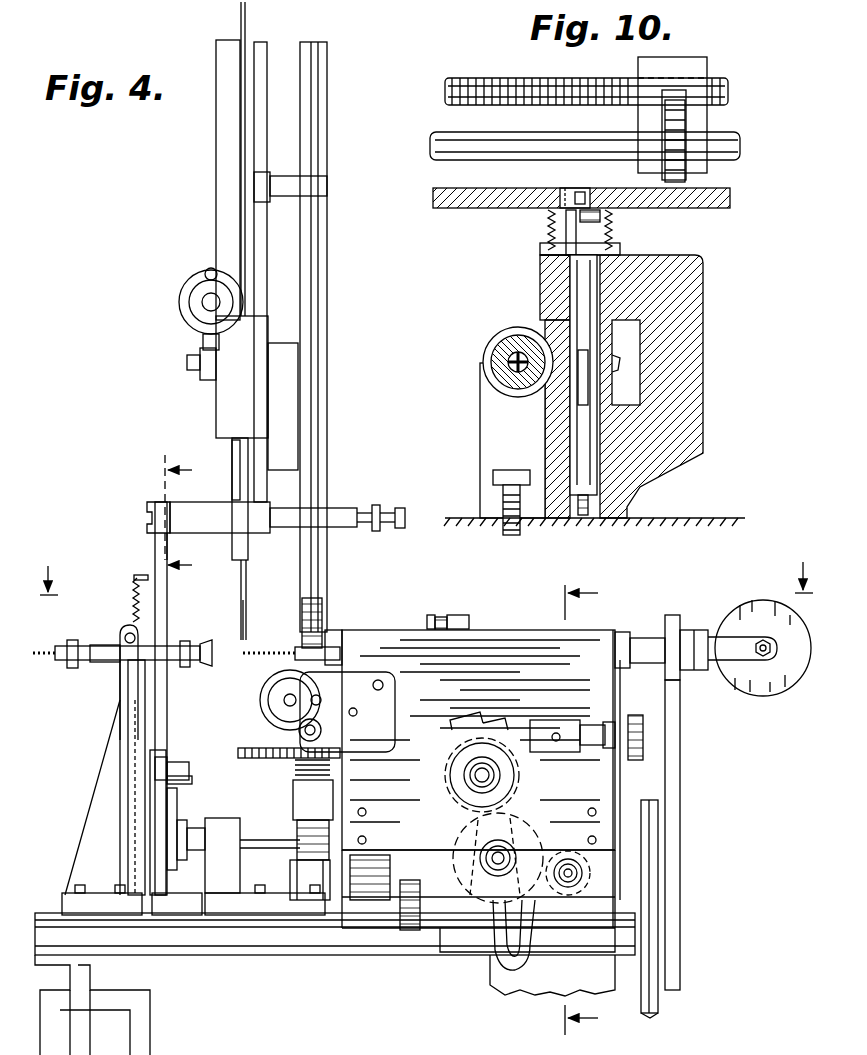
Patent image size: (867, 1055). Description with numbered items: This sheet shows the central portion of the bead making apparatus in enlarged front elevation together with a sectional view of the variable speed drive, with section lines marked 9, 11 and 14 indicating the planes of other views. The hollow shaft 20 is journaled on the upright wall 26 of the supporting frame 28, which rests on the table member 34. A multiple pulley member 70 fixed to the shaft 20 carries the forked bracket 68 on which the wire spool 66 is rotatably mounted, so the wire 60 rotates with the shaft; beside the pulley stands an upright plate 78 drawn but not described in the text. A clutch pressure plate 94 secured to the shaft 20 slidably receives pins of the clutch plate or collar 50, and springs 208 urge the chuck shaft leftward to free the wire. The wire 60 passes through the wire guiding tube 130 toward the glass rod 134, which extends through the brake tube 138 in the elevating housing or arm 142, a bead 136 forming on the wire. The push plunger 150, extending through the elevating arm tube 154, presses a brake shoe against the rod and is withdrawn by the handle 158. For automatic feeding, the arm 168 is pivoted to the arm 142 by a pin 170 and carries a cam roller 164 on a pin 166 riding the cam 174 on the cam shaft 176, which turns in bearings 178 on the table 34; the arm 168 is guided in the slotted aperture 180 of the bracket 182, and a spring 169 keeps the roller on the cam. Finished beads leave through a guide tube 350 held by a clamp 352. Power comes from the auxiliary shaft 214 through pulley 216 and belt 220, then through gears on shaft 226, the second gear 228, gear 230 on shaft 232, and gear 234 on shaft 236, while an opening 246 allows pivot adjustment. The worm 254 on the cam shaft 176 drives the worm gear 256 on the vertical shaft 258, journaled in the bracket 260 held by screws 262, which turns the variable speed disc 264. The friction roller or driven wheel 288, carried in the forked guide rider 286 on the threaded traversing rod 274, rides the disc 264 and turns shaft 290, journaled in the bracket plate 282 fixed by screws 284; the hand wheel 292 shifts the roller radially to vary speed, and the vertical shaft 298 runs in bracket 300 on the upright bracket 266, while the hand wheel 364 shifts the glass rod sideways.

In FIG. 4, the upright bracket 266 is at (216, 198).
In FIG. 4, the bracket 300 is at (315, 188).
In FIG. 4, the hand wheel 364 is at (179, 302).
In FIG. 4, the glass rod 134 is at (241, 592).
In FIG. 4, the brake tube 138 is at (240, 460).
In FIG. 4, the bead 136 is at (243, 636).
In FIG. 4, the elevating arm tube 154 is at (340, 508).
In FIG. 4, the pin 170 is at (147, 502).
In FIG. 4, the push plunger 150 is at (376, 505).
In FIG. 4, the handle 158 is at (405, 515).
In FIG. 4, the elevating housing or arm 142 is at (178, 540).
In FIG. 4, the arm 168 is at (155, 548).
In FIG. 4, the section line 9- 9 is at (185, 515).
In FIG. 4, the section line 11- 11 is at (426, 565).
In FIG. 4, the guide tube 350 is at (105, 660).
In FIG. 4, the clamp 352 is at (122, 700).
In FIG. 4, the spring 169 is at (135, 605).
In FIG. 4, the slotted aperture 180 is at (98, 770).
In FIG. 4, the bracket 182 is at (140, 806).
In FIG. 4, the cam roller 164 is at (172, 757).
In FIG. 4, the pin 166 is at (192, 778).
In FIG. 4, the cam 174 is at (180, 806).
In FIG. 4, the bearings 178 is at (212, 846).
In FIG. 4, the cam shaft 176 is at (248, 850).
In FIG. 10, the cam shaft 176 is at (505, 368).
In FIG. 4, the table member 34 is at (180, 955).
In FIG. 4, the hand wheel 292 is at (260, 700).
In FIG. 4, the traversing rod 274 is at (296, 700).
In FIG. 10, the traversing rod 274 is at (728, 90).
In FIG. 4, the shaft 290 is at (322, 732).
In FIG. 10, the shaft 290 is at (740, 146).
In FIG. 4, the bracket plate 282 is at (392, 717).
In FIG. 4, the screws 284 is at (384, 683).
In FIG. 4, the variable speed disc 264 is at (335, 758).
In FIG. 10, the variable speed disc 264 is at (730, 200).
In FIG. 4, the vertical shaft 298 is at (322, 610).
In FIG. 4, the wire 60 is at (284, 650).
In FIG. 4, the wire guiding tube 130 is at (333, 630).
In FIG. 4, the upright wall 26 is at (497, 632).
In FIG. 4, the clutch plate or collar 50 is at (428, 616).
In FIG. 4, the springs 208 is at (441, 615).
In FIG. 4, the clutch pressure plate 94 is at (458, 615).
In FIG. 4, the supporting frame 28 is at (620, 790).
In FIG. 4, the shaft 236 is at (500, 775).
In FIG. 4, the gear 234 is at (448, 790).
In FIG. 4, the gear 230 is at (518, 815).
In FIG. 4, the shaft 232 is at (505, 855).
In FIG. 4, the shaft 226 is at (575, 873).
In FIG. 4, the opening 246 is at (622, 720).
In FIG. 4, the second gear 228 is at (535, 930).
In FIG. 4, the auxiliary shaft 214 is at (446, 930).
In FIG. 4, the hollow shaft 20 is at (640, 638).
In FIG. 4, the multiple pulley member 70 is at (680, 618).
In FIG. 4, the plate 78 is at (681, 806).
In FIG. 4, the pulley 216 is at (658, 940).
In FIG. 4, the belt 220 is at (658, 1012).
In FIG. 4, the spool 66 is at (742, 690).
In FIG. 4, the forked bracket 68 is at (735, 660).
In FIG. 4, the section line 14- 14 is at (596, 809).
In FIG. 10, the forked guide rider 286 is at (707, 62).
In FIG. 10, the friction roller or driven wheel 288 is at (700, 165).
In FIG. 10, the bracket 260 is at (705, 275).
In FIG. 10, the vertical shaft 258 is at (585, 450).
In FIG. 10, the worm gear 256 is at (640, 362).
In FIG. 10, the worm 254 is at (510, 337).
In FIG. 10, the screws 262 is at (512, 470).